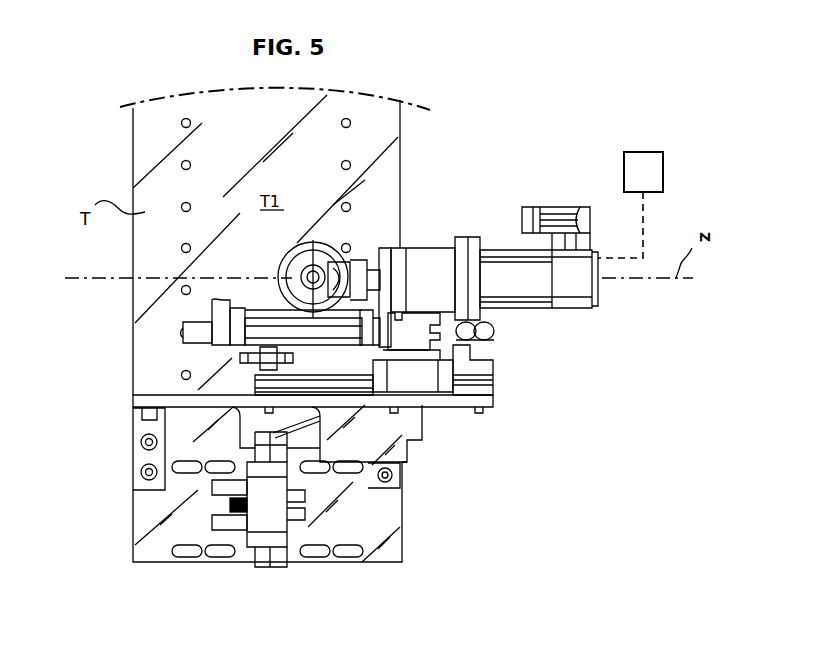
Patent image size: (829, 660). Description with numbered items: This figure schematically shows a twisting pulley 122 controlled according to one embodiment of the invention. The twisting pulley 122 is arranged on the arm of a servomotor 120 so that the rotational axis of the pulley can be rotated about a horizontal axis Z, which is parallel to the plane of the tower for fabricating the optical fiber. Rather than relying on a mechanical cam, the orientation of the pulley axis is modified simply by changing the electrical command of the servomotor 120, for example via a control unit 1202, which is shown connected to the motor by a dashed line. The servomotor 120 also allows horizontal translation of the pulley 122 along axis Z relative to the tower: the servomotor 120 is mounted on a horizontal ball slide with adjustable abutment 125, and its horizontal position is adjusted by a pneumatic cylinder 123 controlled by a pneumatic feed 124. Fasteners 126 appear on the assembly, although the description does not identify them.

The servomotor 120 is at (445, 230).
The twisting pulley 122 is at (336, 242).
The pneumatic cylinder 123 is at (273, 310).
The pneumatic feed 124 is at (257, 512).
The horizontal ball slide with adjustable abutment 125 is at (428, 372).
The fastening bolts 126 is at (432, 338).
The control unit 1202 is at (643, 152).